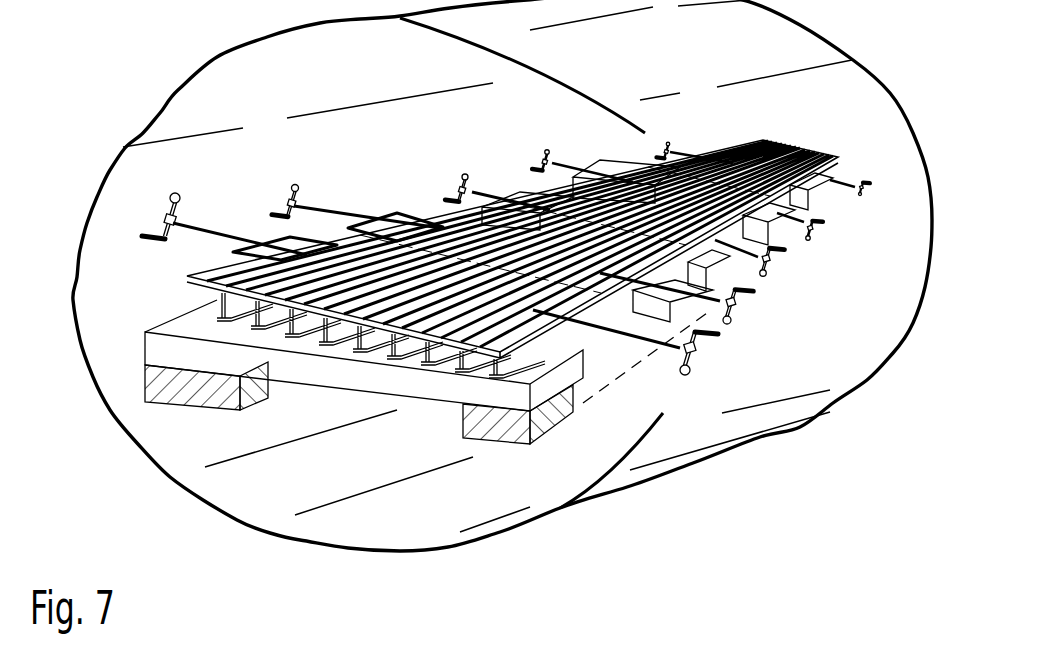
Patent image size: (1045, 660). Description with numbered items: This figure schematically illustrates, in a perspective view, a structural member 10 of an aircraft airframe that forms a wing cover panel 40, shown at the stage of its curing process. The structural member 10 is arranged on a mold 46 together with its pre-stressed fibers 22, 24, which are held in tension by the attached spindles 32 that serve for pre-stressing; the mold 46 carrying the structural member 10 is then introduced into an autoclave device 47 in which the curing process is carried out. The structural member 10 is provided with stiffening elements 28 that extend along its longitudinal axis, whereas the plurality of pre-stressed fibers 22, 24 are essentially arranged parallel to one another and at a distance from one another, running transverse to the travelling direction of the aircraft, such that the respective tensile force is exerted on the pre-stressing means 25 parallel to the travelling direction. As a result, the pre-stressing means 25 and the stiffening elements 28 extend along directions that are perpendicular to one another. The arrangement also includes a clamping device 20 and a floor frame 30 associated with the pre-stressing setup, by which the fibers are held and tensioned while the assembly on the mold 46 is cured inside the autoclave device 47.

The structural member 10 is at (393, 177).
The clamping device 20 is at (294, 178).
The pre-stressed fibers 22 is at (375, 222).
The pre-stressed fibers 24 is at (277, 243).
The pre-stressing means 25 is at (217, 247).
The stiffening elements 28 is at (437, 220).
The floor frame 30 is at (673, 372).
The spindles 32 is at (700, 340).
The wing cover panel 40 is at (500, 150).
The mold 46 is at (452, 385).
The autoclave device 47 is at (243, 497).